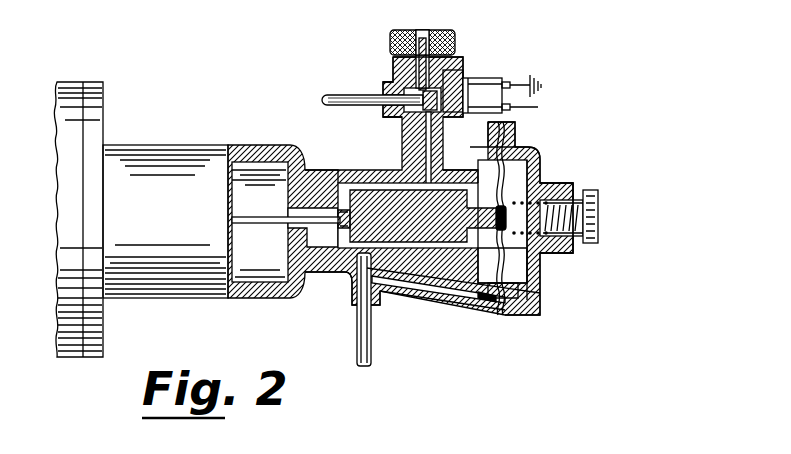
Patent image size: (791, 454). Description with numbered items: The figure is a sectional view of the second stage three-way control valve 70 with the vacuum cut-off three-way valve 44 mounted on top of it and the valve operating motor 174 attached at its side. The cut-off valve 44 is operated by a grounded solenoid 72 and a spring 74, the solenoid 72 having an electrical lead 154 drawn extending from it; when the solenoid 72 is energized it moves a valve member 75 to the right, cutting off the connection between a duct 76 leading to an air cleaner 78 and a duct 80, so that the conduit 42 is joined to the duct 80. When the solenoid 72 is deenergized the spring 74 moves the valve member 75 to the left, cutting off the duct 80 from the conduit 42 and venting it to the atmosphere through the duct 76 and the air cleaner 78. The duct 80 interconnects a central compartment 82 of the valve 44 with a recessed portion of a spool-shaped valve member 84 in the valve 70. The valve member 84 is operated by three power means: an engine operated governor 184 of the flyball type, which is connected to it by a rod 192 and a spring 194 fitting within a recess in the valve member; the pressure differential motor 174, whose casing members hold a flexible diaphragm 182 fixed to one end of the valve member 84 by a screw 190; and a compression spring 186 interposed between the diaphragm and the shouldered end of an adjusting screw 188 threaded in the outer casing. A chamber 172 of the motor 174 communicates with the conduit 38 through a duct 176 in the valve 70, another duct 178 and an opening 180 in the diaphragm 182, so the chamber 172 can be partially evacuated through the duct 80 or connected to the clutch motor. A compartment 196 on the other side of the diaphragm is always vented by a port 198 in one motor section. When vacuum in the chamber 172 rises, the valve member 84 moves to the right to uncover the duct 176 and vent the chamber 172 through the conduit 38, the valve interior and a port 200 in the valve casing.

The conduit 38 is at (372, 357).
The conduit 42 is at (326, 103).
The vacuum cut-off three-way valve 44 is at (391, 71).
The second stage three-way control valve 70 is at (326, 283).
The solenoid 72 is at (486, 80).
The spring 74 is at (452, 82).
The valve member 75 is at (422, 106).
The duct 76 is at (448, 70).
The air cleaner 78 is at (436, 34).
The duct 80 is at (402, 148).
The central compartment 82 is at (412, 92).
The spool-shaped valve member 84 is at (400, 232).
The electrical lead 154 is at (538, 107).
The chamber 172 is at (520, 272).
The valve operating motor 174 is at (549, 163).
The duct 176 is at (355, 278).
The duct 178 is at (452, 290).
The opening 180 is at (506, 310).
The flexible diaphragm 182 is at (541, 148).
The engine operated governor 184 is at (155, 280).
The compression spring 186 is at (568, 186).
The adjusting screw 188 is at (600, 218).
The screw 190 is at (510, 220).
The rod 192 is at (265, 224).
The spring 194 is at (342, 226).
The compartment 196 is at (484, 275).
The port 198 is at (480, 158).
The port 200 is at (338, 178).